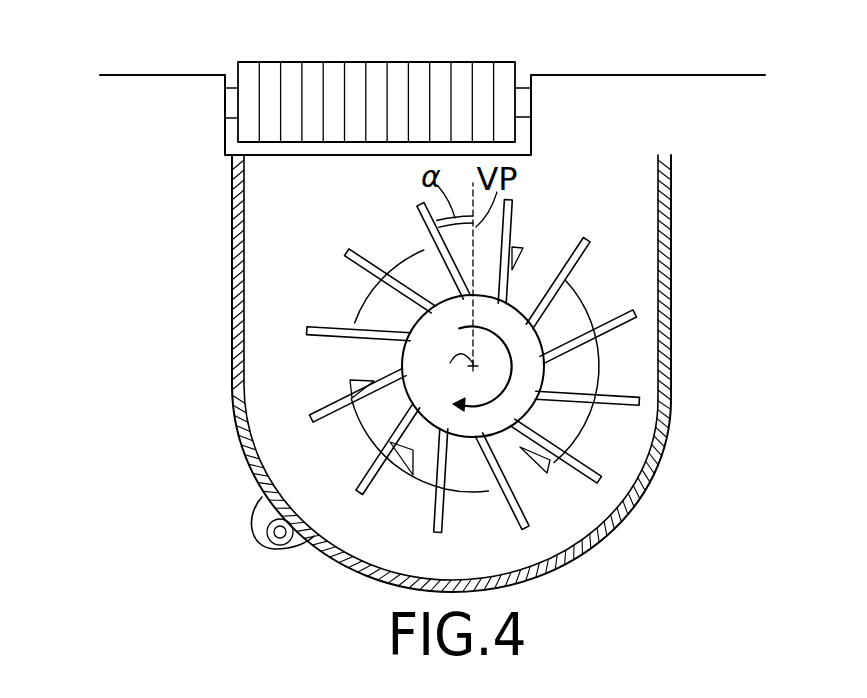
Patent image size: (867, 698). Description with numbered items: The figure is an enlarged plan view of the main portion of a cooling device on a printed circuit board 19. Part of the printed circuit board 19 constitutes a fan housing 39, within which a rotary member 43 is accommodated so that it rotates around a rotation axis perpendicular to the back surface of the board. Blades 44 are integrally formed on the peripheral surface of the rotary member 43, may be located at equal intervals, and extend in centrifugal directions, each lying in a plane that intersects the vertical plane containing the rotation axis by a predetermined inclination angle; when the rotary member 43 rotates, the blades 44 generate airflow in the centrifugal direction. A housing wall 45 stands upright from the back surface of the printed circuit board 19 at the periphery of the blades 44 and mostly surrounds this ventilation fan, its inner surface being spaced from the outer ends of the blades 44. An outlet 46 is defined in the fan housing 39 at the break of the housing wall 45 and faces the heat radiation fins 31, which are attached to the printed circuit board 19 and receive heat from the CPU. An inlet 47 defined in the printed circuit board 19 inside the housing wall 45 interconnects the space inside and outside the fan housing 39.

The printed circuit board 19 is at (197, 76).
The heat radiation fins 31 is at (515, 72).
The outlet 46 is at (240, 172).
The fan housing 39 is at (685, 455).
The rotary member 43 is at (432, 325).
The blades 44 is at (350, 252).
The inlet 47 is at (417, 262).
The housing wall 45 is at (247, 445).